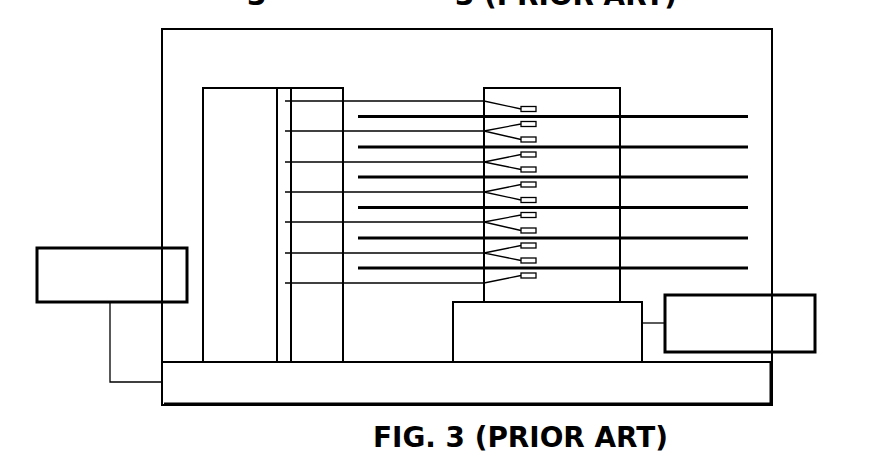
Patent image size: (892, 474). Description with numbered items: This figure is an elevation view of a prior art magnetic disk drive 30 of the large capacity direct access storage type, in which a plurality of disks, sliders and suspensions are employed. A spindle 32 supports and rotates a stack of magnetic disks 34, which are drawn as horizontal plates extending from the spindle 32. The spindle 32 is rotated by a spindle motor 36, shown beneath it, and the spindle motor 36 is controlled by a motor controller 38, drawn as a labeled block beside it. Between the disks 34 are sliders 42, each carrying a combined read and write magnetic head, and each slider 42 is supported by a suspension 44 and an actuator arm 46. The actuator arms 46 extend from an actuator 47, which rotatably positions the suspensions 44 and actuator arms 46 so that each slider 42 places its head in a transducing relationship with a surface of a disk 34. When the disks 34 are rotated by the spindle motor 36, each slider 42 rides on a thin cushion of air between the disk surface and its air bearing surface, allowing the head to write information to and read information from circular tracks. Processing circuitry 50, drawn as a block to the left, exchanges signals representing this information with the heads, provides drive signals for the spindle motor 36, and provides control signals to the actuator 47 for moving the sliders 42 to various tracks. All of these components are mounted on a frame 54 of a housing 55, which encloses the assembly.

The magnetic disk drive 30 is at (670, 86).
The spindle 32 is at (598, 88).
The magnetic disk 34 is at (728, 119).
The spindle motor 36 is at (566, 344).
The motor controller 38 is at (803, 353).
The slider 42 is at (536, 138).
The suspension 44 is at (510, 137).
The actuator arm 46 is at (441, 130).
The actuator 47 is at (310, 87).
The processing circuitry 50 is at (96, 248).
The frame 54 is at (272, 406).
The housing 55 is at (697, 29).